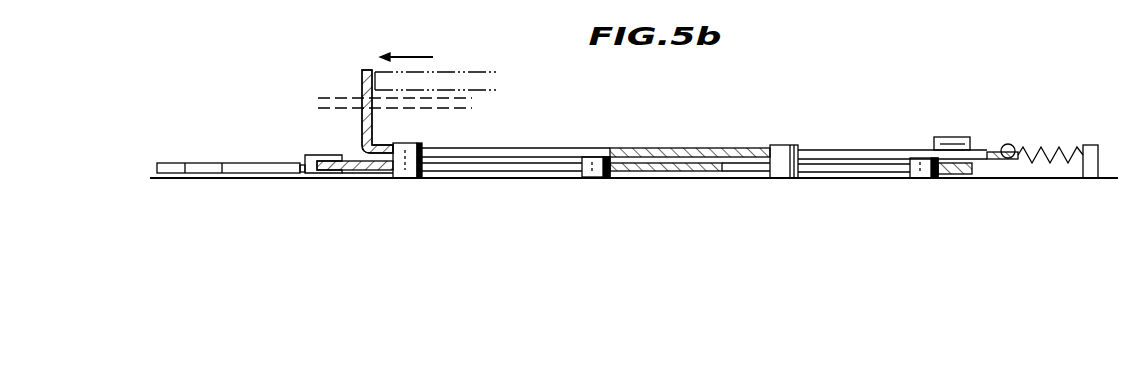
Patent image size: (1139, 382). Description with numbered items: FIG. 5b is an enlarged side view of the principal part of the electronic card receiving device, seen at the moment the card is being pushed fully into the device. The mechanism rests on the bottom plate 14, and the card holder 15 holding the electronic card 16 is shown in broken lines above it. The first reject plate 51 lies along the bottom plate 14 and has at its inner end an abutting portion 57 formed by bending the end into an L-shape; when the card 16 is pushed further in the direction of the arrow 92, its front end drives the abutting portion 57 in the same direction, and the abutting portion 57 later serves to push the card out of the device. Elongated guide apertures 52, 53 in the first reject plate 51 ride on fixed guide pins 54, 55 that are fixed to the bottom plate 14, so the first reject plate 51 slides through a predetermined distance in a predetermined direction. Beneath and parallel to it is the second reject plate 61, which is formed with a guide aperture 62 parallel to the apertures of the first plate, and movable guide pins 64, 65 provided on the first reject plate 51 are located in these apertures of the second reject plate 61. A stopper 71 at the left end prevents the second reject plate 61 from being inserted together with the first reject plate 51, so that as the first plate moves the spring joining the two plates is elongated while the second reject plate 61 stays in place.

The bottom plate 14 is at (364, 173).
The card holder 15 is at (325, 98).
The electronic card 16 is at (472, 72).
The first reject plate 51 is at (683, 155).
The elongated guide aperture 52 is at (535, 156).
The elongated guide aperture 53 is at (870, 158).
The fixed guide pin 54 is at (416, 150).
The fixed guide pin 55 is at (786, 148).
The abutting portion 57 is at (365, 70).
The second reject plate 61 is at (672, 171).
The guide aperture 62 is at (537, 171).
The movable guide pin 64 is at (596, 177).
The movable guide pin 65 is at (926, 177).
The stopper 71 is at (258, 163).
The arrow 92 is at (400, 57).